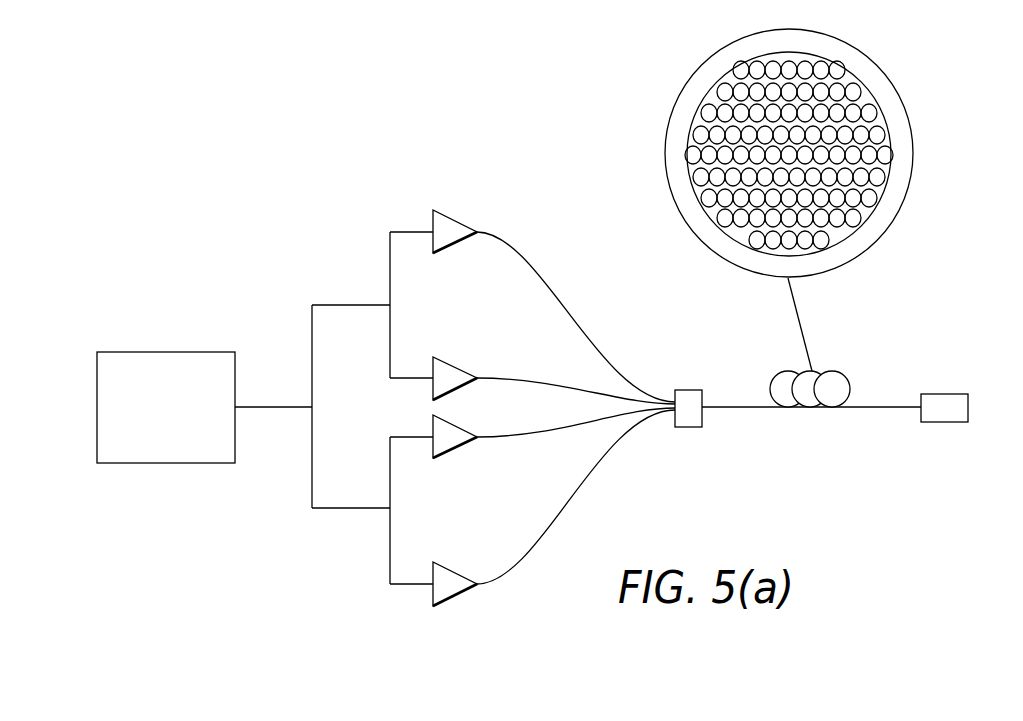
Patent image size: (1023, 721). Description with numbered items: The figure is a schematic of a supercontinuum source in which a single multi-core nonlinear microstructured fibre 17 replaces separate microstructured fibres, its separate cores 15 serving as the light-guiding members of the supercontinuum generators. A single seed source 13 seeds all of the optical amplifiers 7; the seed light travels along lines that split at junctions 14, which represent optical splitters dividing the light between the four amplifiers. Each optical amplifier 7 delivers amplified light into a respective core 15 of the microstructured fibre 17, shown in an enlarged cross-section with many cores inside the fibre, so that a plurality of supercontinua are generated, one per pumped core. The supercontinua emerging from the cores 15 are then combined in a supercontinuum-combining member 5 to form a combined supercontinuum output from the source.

The seed source 13 is at (212, 352).
The junctions 14 is at (312, 406).
The optical amplifier 7 is at (452, 220).
The core 15 is at (758, 117).
The microstructured fibre 17 is at (915, 152).
The supercontinuum-combining member 5 is at (953, 423).